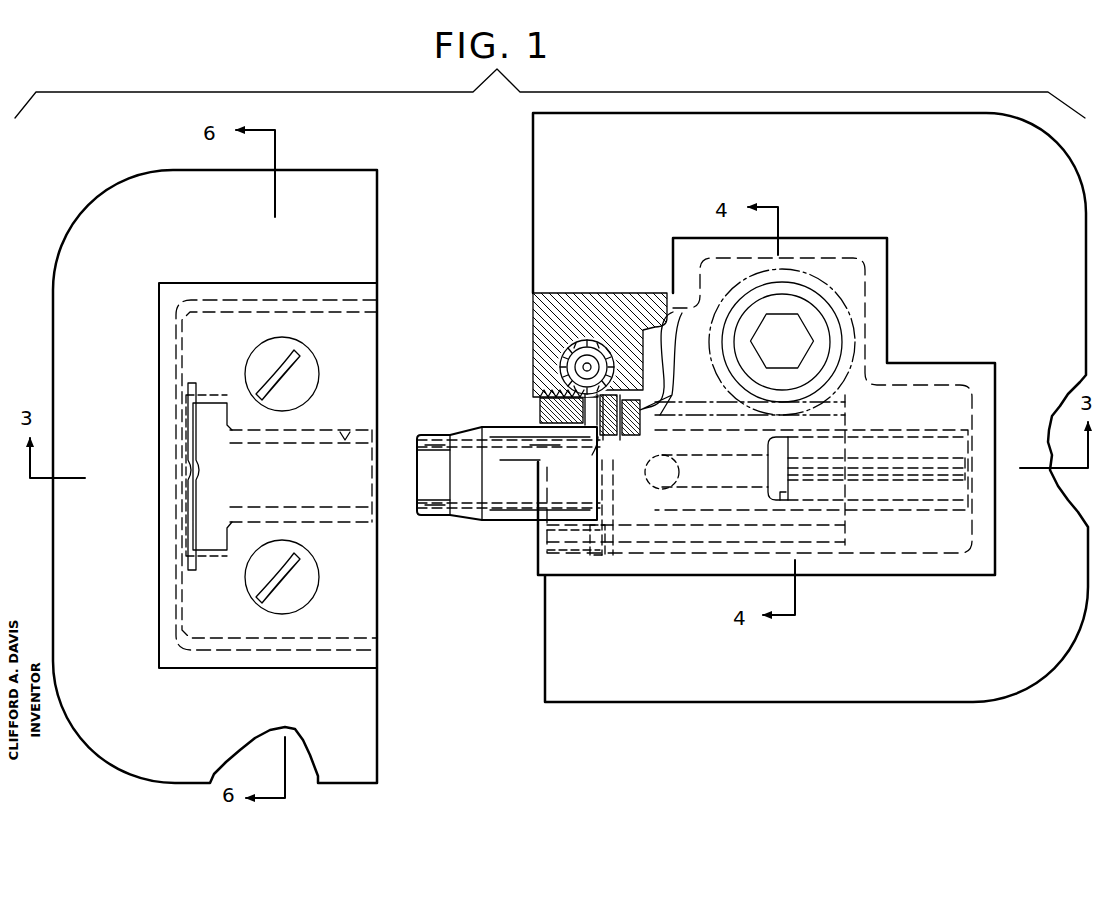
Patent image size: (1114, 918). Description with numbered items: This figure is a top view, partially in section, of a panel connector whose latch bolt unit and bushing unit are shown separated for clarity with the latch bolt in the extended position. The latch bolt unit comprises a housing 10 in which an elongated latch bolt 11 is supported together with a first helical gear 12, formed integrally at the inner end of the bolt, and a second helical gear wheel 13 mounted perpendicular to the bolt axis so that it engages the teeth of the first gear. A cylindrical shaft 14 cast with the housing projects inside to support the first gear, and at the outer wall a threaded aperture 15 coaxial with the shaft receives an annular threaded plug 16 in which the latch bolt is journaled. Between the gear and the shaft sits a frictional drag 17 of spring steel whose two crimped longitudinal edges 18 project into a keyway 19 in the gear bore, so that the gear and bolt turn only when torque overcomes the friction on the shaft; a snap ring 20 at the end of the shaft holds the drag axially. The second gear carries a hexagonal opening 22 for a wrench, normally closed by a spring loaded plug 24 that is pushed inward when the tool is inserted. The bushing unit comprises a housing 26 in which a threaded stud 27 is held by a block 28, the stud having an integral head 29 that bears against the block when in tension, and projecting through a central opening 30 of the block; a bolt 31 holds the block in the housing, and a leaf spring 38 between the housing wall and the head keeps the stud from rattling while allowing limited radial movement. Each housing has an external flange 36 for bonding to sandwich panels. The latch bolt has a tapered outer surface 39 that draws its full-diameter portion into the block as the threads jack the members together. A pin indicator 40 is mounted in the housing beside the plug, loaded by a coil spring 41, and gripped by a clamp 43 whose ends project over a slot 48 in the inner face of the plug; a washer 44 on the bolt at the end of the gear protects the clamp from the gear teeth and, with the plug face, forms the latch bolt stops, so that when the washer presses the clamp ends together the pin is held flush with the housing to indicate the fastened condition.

The housing 10 is at (880, 300).
The latch bolt 11 is at (487, 522).
The first helical gear 12 is at (641, 376).
The second helical gear wheel 13 is at (838, 298).
The cylindrical shaft 14 is at (767, 450).
The threaded aperture 15 is at (540, 394).
The annular threaded plug 16 is at (540, 415).
The frictional drag 17 is at (872, 510).
The crimped longitudinal edges 18 is at (912, 463).
The keyway 19 is at (700, 463).
The snap ring 20 is at (770, 498).
The opening 22 is at (768, 316).
The spring loaded plug 24 is at (786, 355).
The housing 26 is at (312, 290).
The threaded stud 27 is at (312, 518).
The block 28 is at (222, 304).
The stud head 29 is at (222, 400).
The central opening 30 is at (348, 430).
The bolt 31 is at (298, 400).
The external flange 36 is at (358, 247).
The leaf spring 38 is at (188, 470).
The tapered outer surface 39 is at (463, 432).
The pin indicator 40 is at (588, 340).
The coil spring 41 is at (578, 345).
The clamp 43 is at (605, 346).
The washer 44 is at (595, 553).
The slot 48 is at (590, 456).